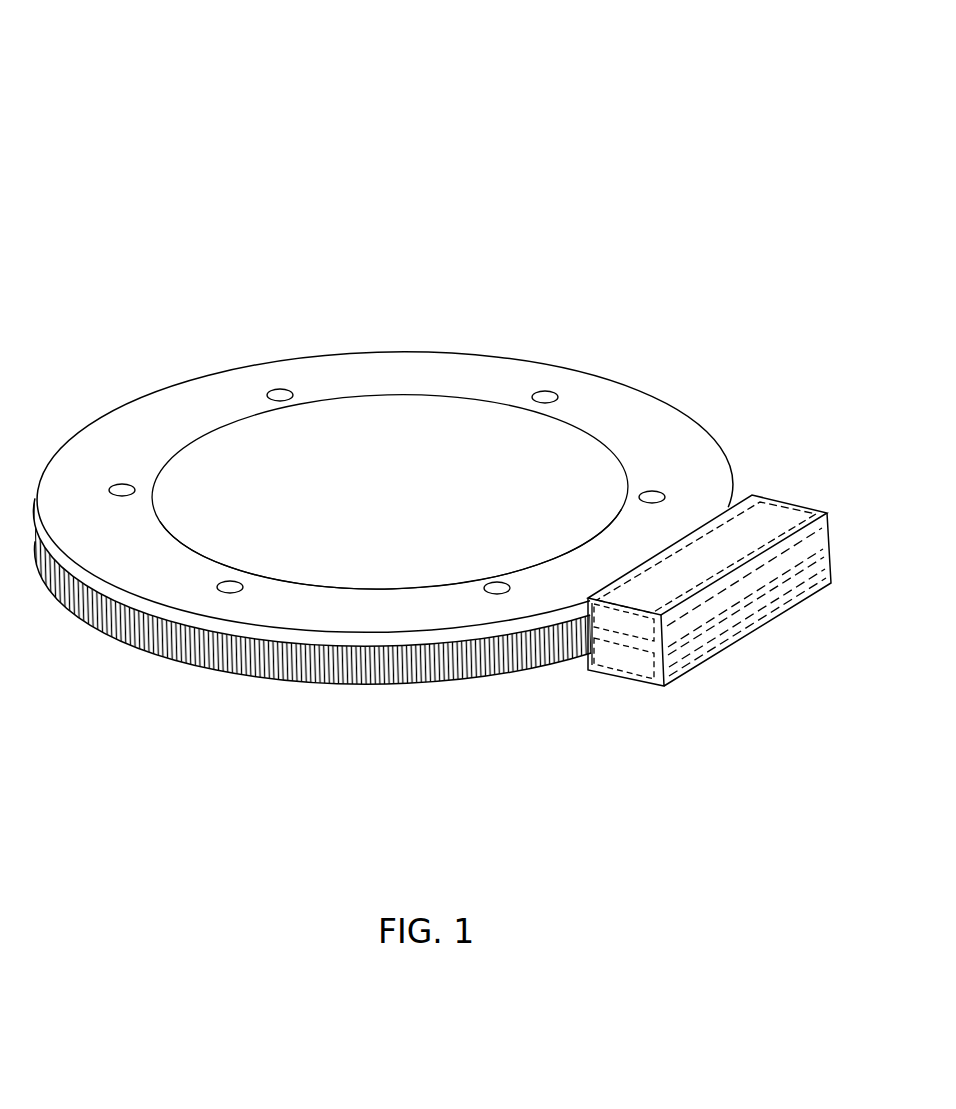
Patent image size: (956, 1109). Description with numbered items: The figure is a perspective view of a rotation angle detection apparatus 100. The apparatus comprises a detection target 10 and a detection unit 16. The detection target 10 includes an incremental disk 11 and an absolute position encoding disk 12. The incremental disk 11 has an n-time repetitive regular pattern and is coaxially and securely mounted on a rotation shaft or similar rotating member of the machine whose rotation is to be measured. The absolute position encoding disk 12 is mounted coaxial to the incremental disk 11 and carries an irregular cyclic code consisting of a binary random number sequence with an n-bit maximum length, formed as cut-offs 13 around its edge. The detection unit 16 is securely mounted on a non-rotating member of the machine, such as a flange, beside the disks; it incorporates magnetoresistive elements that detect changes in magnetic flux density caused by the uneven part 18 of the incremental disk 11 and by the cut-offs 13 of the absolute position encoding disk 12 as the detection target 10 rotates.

The rotation angle detection apparatus 100 is at (666, 77).
The detection target 10 is at (274, 697).
The incremental disk 11 is at (155, 655).
The absolute position encoding disk 12 is at (227, 398).
The cut-offs 13 is at (598, 372).
The detection unit 16 is at (673, 690).
The uneven part 18 is at (212, 670).